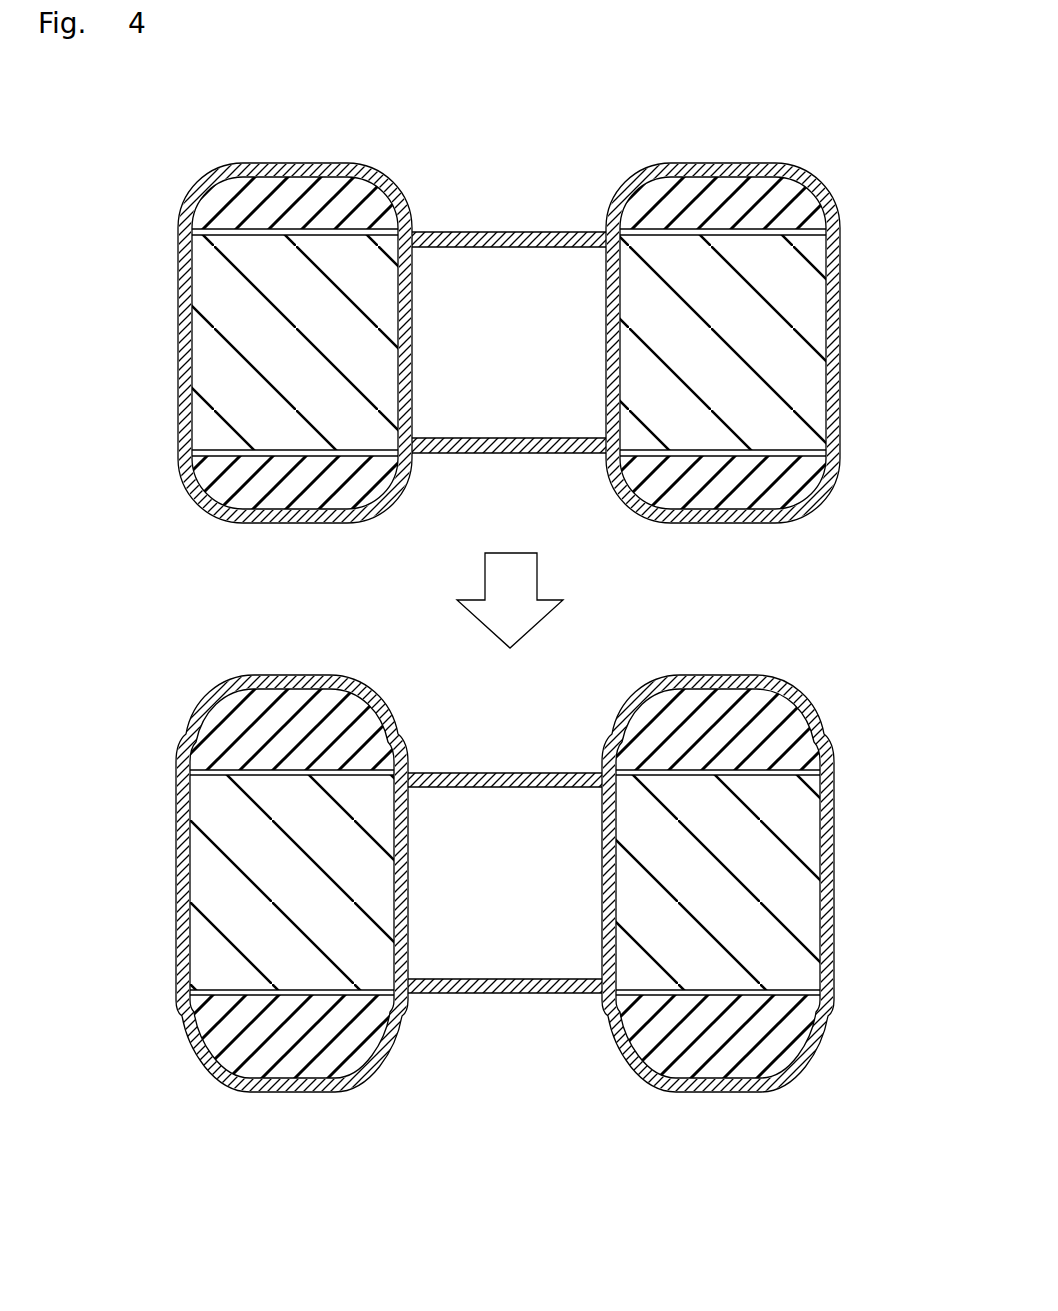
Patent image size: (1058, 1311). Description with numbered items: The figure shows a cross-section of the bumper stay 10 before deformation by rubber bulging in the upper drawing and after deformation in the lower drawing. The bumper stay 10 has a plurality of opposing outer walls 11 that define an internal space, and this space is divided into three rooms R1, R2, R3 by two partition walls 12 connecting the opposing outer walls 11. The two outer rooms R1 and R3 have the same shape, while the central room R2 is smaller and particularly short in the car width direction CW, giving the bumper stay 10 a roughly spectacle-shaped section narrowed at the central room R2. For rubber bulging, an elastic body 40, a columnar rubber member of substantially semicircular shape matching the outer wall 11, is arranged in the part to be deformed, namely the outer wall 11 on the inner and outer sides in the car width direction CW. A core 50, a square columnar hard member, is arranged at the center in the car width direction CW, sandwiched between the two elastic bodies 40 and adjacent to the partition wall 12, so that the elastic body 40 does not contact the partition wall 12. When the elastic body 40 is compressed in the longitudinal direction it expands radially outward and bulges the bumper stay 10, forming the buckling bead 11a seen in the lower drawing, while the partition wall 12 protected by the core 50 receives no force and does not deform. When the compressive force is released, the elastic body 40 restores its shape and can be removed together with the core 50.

The bumper stay 10 is at (831, 152).
The outer wall 11 is at (340, 166).
The buckling bead 11a is at (300, 680).
The partition wall 12 is at (413, 272).
The elastic body 40 is at (253, 187).
The core 50 is at (203, 253).
The outer room R1 is at (396, 457).
The central room R2 is at (520, 356).
The outer room R3 is at (618, 457).
The car width direction CW is at (120, 232).